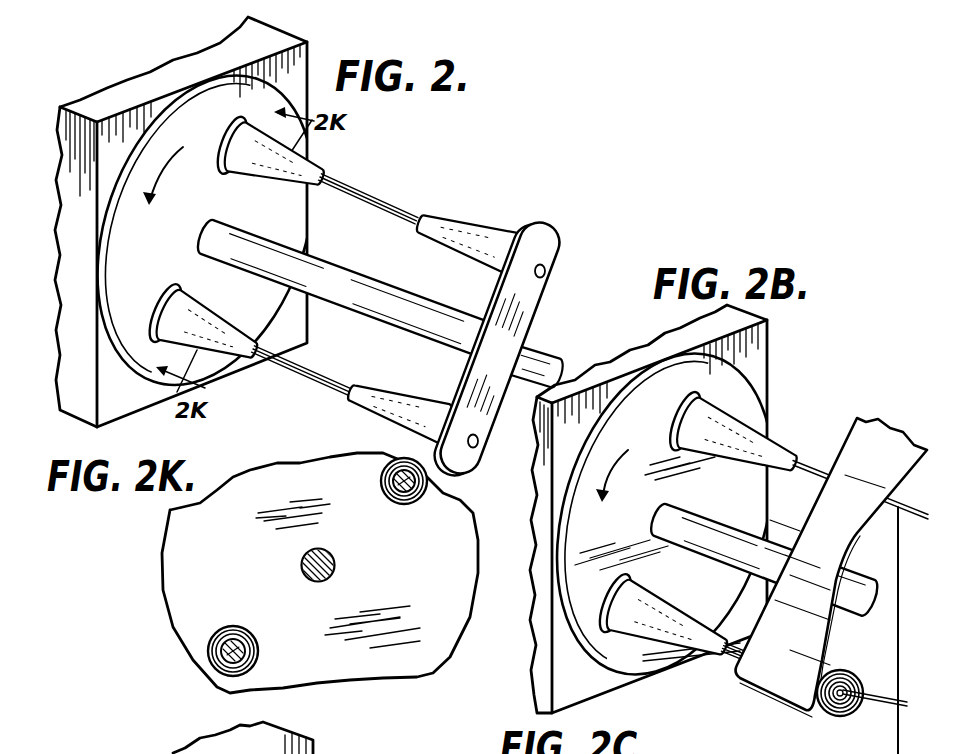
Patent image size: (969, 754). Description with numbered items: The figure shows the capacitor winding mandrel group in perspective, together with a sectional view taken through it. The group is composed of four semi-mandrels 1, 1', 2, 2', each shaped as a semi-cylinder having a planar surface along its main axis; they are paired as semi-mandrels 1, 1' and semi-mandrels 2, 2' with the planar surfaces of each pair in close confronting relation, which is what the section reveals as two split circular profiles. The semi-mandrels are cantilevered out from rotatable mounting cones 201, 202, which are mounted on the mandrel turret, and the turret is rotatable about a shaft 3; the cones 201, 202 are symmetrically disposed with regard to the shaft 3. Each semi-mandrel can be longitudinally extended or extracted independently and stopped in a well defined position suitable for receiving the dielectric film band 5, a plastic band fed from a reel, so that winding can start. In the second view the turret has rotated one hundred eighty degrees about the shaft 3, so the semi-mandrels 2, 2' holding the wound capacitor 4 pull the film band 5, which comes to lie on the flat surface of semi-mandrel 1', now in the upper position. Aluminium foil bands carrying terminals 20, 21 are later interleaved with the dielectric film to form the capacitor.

In FIG. 2, the semi-mandrel 1 is at (370, 408).
In FIG. 2K, the semi-mandrel 1 is at (247, 651).
In FIG. 2, the semi-mandrel 1' is at (303, 366).
In FIG. 2K, the semi-mandrel 1' is at (227, 613).
In FIG. 2B, the semi-mandrel 1' is at (865, 490).
In FIG. 2, the semi-mandrel 2 is at (467, 229).
In FIG. 2K, the semi-mandrel 2 is at (388, 460).
In FIG. 2B, the semi-mandrel 2 is at (809, 740).
In FIG. 2, the semi-mandrel 2' is at (368, 219).
In FIG. 2K, the semi-mandrel 2' is at (464, 495).
In FIG. 2B, the semi-mandrel 2' is at (823, 689).
In FIG. 2, the shaft 3 is at (357, 275).
In FIG. 2K, the shaft 3 is at (336, 563).
In FIG. 2B, the shaft 3 is at (874, 598).
In FIG. 2B, the capacitor 4 is at (818, 708).
In FIG. 2B, the dielectric film band 5 is at (858, 420).
In FIG. 2B, the terminal 20 is at (685, 662).
In FIG. 2B, the terminal 21 is at (887, 693).
In FIG. 2, the rotatable mounting cone 201 is at (300, 166).
In FIG. 2, the rotatable mounting cone 202 is at (216, 343).